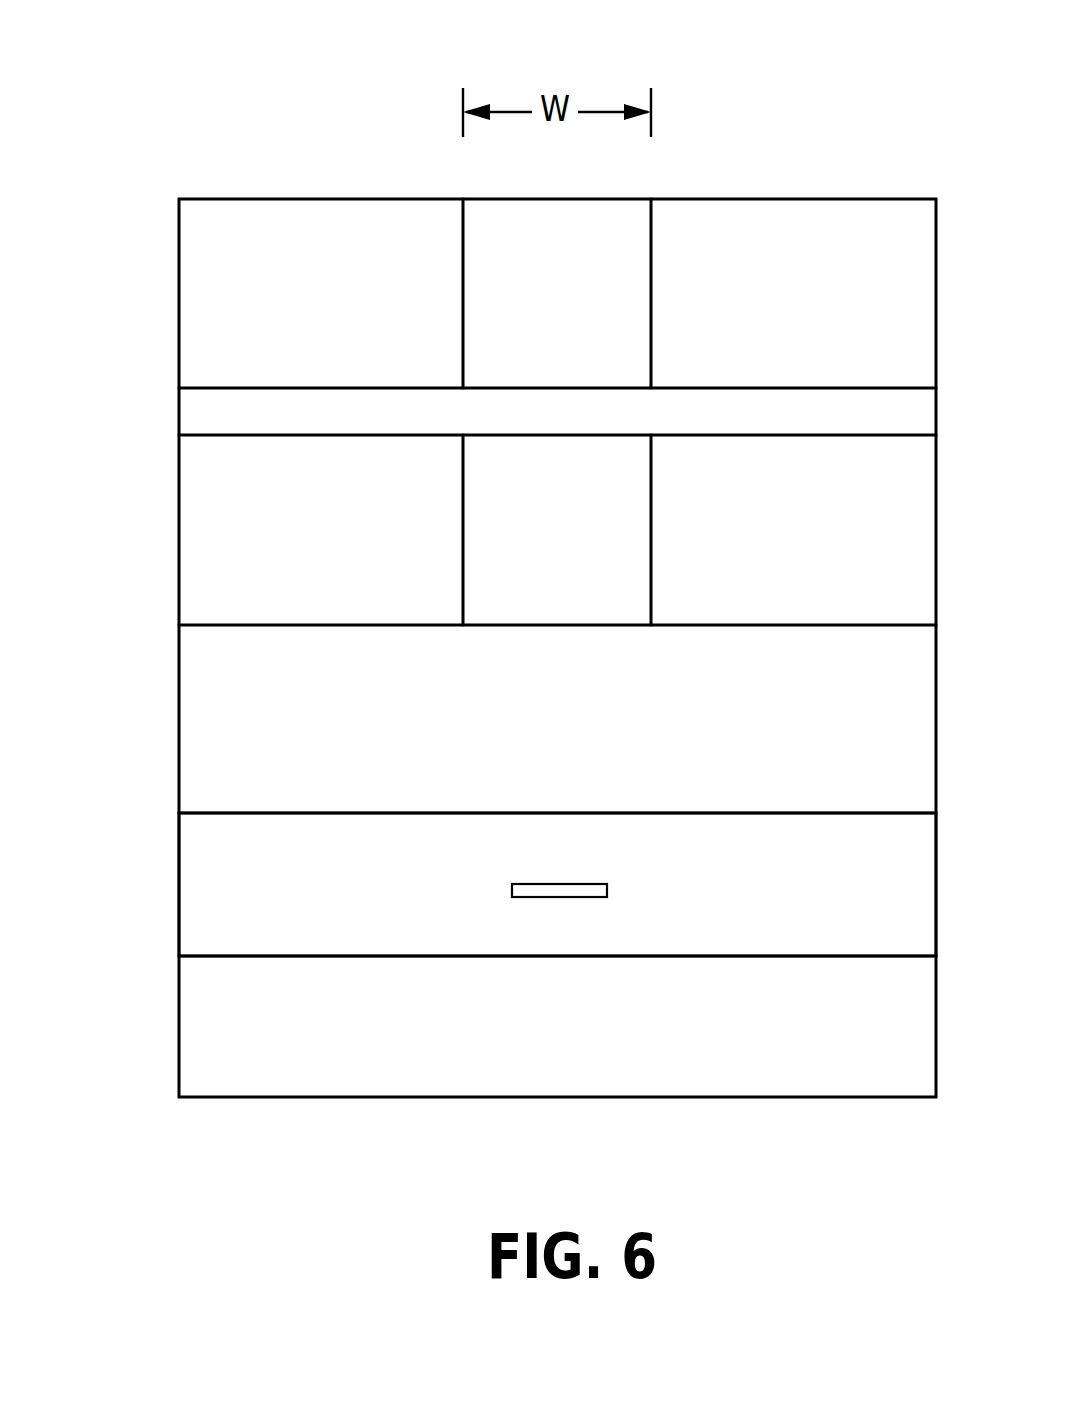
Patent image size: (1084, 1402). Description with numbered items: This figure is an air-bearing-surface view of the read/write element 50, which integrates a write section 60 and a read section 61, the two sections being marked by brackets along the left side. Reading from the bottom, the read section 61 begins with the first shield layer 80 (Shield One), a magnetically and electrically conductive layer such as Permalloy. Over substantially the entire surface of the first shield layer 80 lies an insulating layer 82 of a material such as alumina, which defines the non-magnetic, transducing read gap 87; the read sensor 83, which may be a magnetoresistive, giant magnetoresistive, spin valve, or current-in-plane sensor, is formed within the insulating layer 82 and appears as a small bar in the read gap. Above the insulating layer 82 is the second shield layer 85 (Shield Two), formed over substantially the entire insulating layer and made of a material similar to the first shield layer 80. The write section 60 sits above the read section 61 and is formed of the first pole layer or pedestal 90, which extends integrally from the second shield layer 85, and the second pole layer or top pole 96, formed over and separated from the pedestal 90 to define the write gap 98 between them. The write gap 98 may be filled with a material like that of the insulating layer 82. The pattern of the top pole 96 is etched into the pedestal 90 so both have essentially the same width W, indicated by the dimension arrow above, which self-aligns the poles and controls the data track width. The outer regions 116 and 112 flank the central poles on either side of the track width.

The read/write element 50 is at (530, 32).
The write section 60 is at (160, 201).
The read section 61 is at (163, 634).
The second pole layer outer portions 116 is at (349, 323).
The second pole layer 96 is at (535, 338).
The write gap 98 is at (776, 423).
The first pole layer outer portions 112 is at (353, 552).
The first pole layer or pedestal P1 90 is at (586, 580).
The second shield layer 85 is at (821, 758).
The insulating layer 82 is at (851, 904).
The read gap 87 is at (557, 884).
The read sensor 83 is at (585, 883).
The first shield layer 80 is at (820, 1036).